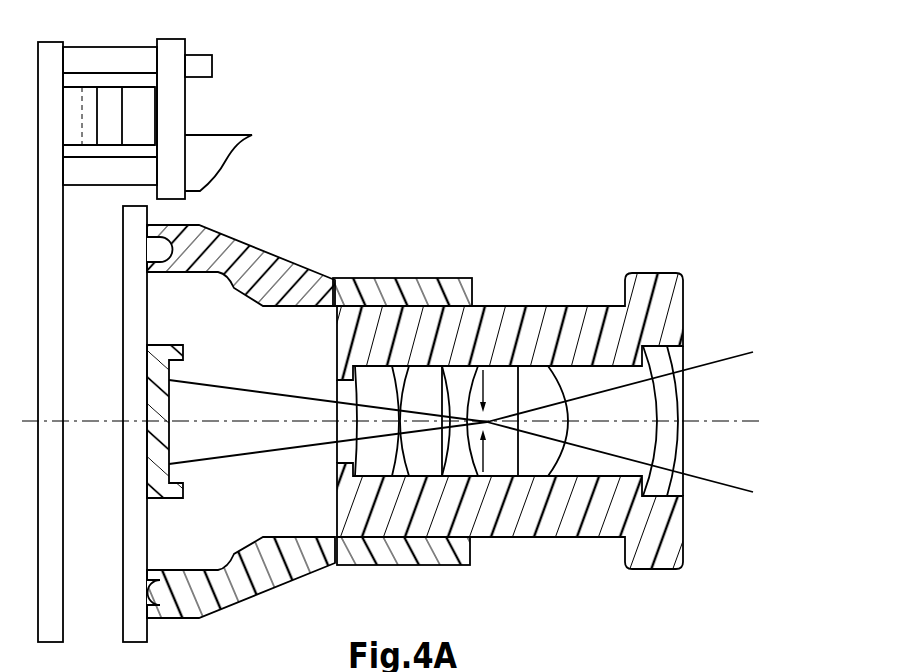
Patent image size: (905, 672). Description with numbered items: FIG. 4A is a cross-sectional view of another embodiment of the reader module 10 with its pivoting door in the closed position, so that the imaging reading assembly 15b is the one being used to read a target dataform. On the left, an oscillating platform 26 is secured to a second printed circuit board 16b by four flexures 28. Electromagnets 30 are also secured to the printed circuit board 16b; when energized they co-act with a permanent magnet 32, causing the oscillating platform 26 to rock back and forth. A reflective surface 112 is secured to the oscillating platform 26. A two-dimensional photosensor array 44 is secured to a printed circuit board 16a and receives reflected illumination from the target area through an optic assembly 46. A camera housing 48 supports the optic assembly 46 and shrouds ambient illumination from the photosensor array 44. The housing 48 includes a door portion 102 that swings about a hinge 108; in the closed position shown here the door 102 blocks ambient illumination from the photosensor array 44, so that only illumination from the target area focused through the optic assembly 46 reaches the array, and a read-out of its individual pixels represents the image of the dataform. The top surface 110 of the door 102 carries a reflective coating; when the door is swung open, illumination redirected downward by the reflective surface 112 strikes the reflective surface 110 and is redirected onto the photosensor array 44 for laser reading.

The reader module 10 is at (598, 186).
The imaging reading assembly 15b is at (610, 618).
The printed circuit board 16a is at (138, 643).
The second printed circuit board 16b is at (52, 643).
The oscillating platform 26 is at (171, 45).
The flexures 28 is at (127, 93).
The electromagnets 30 is at (73, 96).
The permanent magnet 32 is at (136, 93).
The two-dimensional photosensor array 44 is at (165, 492).
The optic assembly 46 is at (517, 510).
The camera housing 48 is at (350, 556).
The door portion 102 is at (253, 401).
The hinge 108 is at (333, 303).
The top surface of the door 110 is at (257, 248).
The reflective surface 112 is at (252, 136).